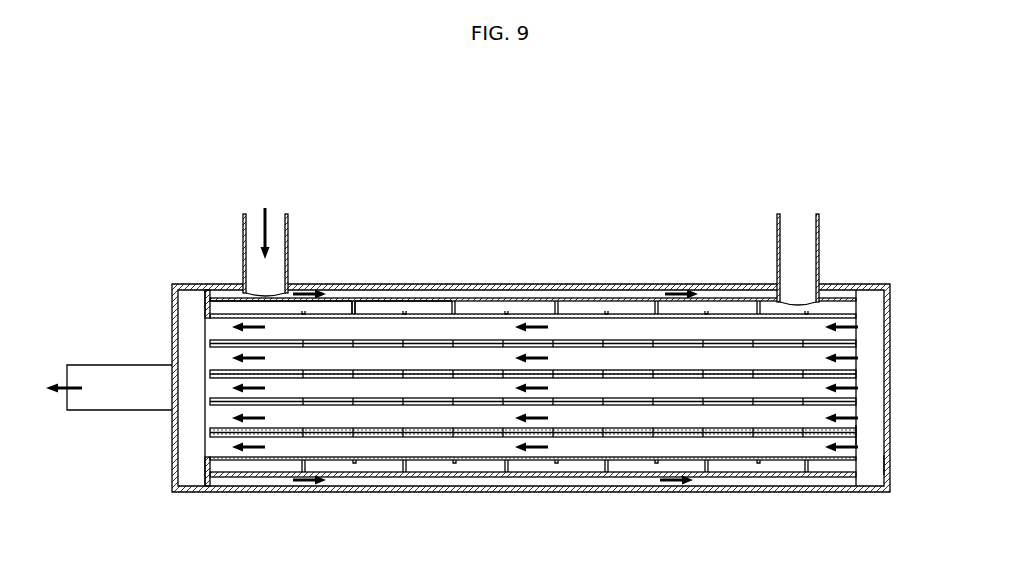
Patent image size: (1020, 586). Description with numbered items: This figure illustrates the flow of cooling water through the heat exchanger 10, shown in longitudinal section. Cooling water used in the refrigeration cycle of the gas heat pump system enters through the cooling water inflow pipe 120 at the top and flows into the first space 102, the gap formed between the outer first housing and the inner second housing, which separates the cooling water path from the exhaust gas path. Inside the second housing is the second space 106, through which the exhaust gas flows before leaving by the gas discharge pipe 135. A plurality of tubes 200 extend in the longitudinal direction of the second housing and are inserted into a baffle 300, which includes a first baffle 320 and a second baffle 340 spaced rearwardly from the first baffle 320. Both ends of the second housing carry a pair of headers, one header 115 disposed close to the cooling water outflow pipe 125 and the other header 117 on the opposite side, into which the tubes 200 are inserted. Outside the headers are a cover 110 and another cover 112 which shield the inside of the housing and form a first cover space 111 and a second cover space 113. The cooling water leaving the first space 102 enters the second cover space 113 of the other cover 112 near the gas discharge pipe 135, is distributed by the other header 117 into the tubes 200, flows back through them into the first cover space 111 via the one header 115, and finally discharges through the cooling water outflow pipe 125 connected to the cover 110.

The heat exchanger 10 is at (535, 162).
The first space 102 is at (535, 480).
The second space 106 is at (530, 302).
The cover 110 is at (172, 463).
The first cover space 111 is at (186, 442).
The other cover 112 is at (882, 462).
The second cover space 113 is at (872, 339).
The header 115 is at (205, 323).
The other header 117 is at (858, 439).
The cooling water inflow pipe 120 is at (243, 228).
The cooling water outflow pipe 125 is at (90, 365).
The gas discharge pipe 135 is at (777, 228).
The tube 200 is at (257, 448).
The baffle 300 is at (428, 217).
The first baffle 320 is at (302, 314).
The second baffle 340 is at (353, 313).